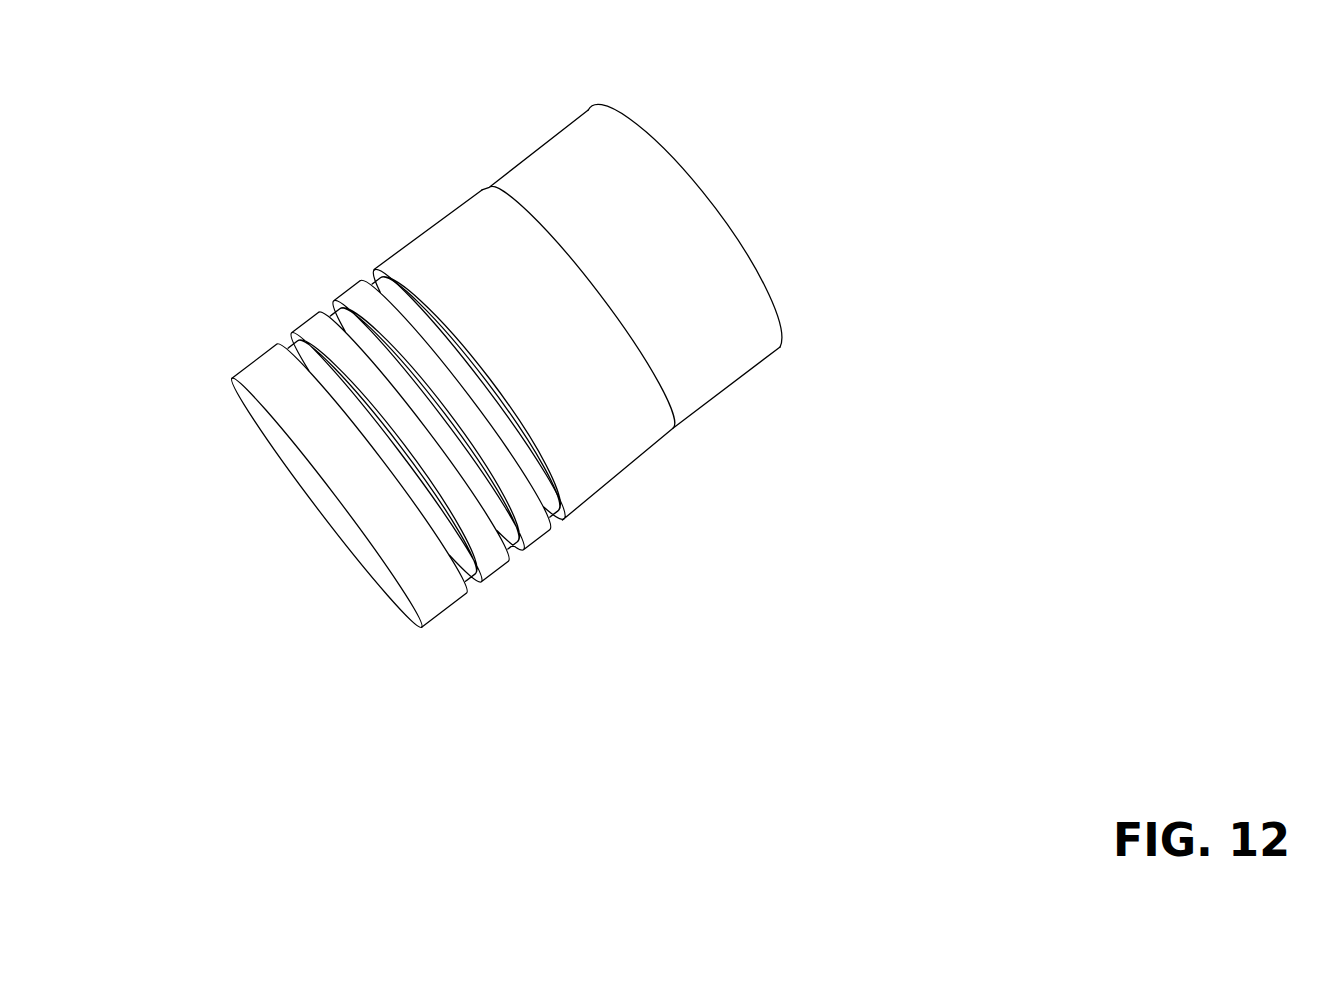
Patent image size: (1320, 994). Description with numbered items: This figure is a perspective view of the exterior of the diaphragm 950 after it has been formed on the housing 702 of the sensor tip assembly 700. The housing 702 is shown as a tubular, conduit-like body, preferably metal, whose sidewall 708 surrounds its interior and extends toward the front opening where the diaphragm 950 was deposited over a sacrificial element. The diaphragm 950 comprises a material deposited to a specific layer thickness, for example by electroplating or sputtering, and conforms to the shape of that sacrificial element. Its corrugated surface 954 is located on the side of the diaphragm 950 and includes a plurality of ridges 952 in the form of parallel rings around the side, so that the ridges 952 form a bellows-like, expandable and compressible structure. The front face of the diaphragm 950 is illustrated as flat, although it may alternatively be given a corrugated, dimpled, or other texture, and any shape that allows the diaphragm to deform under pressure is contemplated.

The sensor tip assembly 700 is at (538, 401).
The housing 702 is at (679, 240).
The sidewall 708 is at (743, 330).
The diaphragm 950 is at (447, 216).
The plurality of ridges 952 is at (329, 278).
The corrugated surface 954 is at (245, 367).